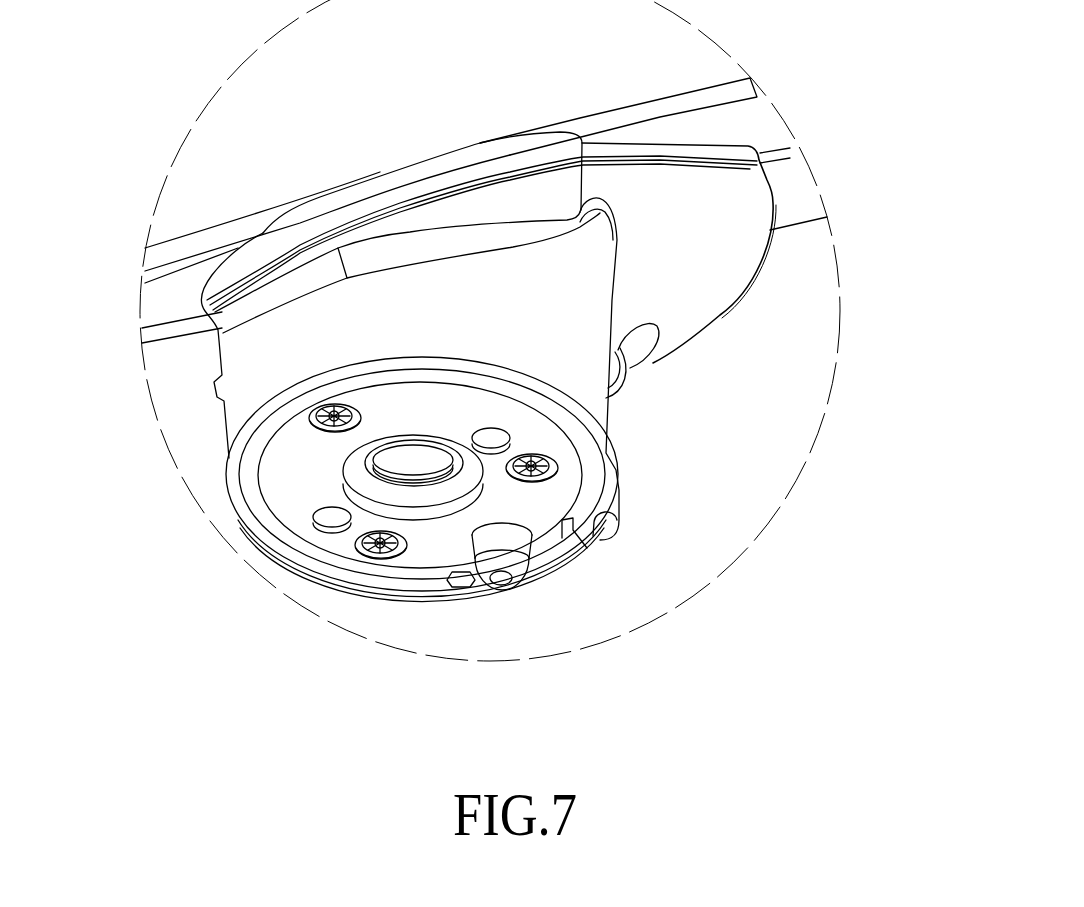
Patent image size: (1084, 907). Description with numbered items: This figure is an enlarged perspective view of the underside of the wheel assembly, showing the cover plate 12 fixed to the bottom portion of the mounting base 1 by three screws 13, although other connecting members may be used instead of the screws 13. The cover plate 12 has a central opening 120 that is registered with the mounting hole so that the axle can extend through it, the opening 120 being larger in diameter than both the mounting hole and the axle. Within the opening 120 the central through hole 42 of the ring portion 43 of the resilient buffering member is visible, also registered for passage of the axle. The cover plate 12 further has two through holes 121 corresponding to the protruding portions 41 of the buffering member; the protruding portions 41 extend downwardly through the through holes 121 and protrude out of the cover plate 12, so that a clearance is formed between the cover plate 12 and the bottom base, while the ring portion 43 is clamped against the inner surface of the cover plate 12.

The mounting base 1 is at (245, 367).
The cover plate 12 is at (287, 490).
The screws 13 is at (316, 421).
The through holes 121 is at (300, 532).
The protruding portions 41 is at (331, 523).
The central opening 120 is at (415, 540).
The central through hole 42 is at (433, 503).
The ring portion 43 is at (455, 490).